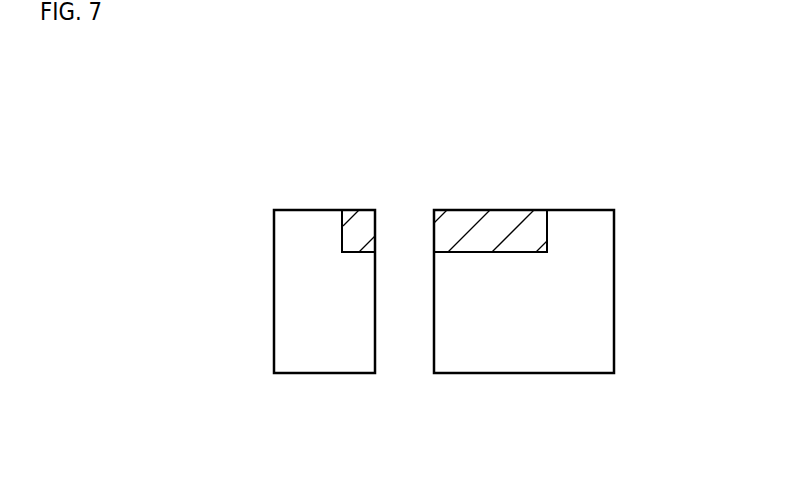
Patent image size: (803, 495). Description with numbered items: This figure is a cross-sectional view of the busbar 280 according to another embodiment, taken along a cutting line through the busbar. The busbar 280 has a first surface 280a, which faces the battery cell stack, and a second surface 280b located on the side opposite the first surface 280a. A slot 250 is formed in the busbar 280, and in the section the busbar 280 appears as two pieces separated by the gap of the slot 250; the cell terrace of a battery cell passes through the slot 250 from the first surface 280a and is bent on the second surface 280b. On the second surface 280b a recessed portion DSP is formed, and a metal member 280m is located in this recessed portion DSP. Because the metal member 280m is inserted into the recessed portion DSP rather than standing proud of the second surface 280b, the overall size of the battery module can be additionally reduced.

The slot 250 is at (402, 258).
The busbar 280 is at (568, 274).
The first surface 280a is at (531, 374).
The second surface 280b is at (297, 210).
The metal member 280m is at (485, 227).
The recessed portion DSP is at (523, 176).